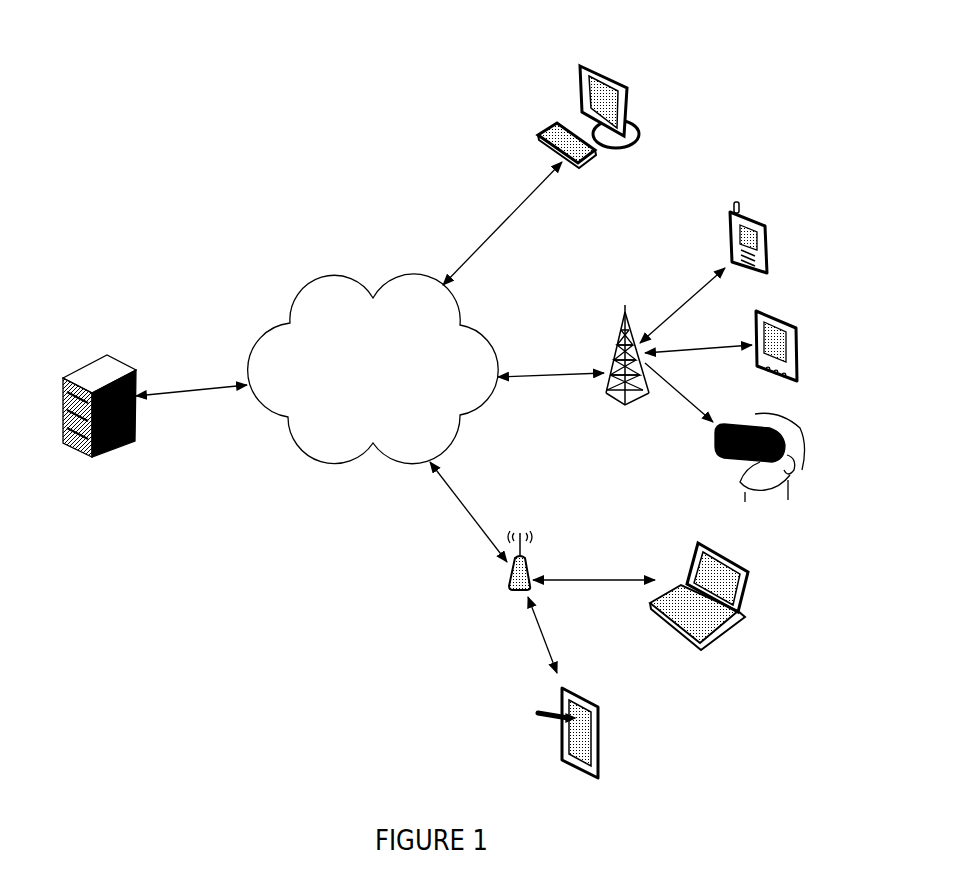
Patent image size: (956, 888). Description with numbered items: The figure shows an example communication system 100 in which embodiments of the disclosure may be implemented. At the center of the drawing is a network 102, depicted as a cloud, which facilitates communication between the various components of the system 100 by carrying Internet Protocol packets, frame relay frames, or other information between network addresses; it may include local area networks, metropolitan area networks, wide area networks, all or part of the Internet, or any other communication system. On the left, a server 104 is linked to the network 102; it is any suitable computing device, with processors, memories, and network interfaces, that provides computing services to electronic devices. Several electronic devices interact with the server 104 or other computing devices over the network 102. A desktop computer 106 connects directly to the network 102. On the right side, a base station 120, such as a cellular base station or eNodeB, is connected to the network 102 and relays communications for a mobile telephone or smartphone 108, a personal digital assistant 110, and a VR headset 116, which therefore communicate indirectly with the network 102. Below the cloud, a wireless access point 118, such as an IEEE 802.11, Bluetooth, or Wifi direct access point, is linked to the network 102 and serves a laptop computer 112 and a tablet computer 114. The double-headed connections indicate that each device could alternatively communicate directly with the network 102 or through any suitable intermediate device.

The communication system 100 is at (218, 157).
The network 102 is at (292, 292).
The server 104 is at (75, 370).
The desktop computer 106 is at (578, 68).
The mobile telephone or smartphone 108 is at (765, 218).
The personal digital assistant (PDA) 110 is at (793, 313).
The laptop computer 112 is at (757, 580).
The tablet computer 114 is at (605, 723).
The VR headset 116 is at (800, 443).
The wireless access point 118 is at (532, 567).
The base station 120 is at (653, 397).